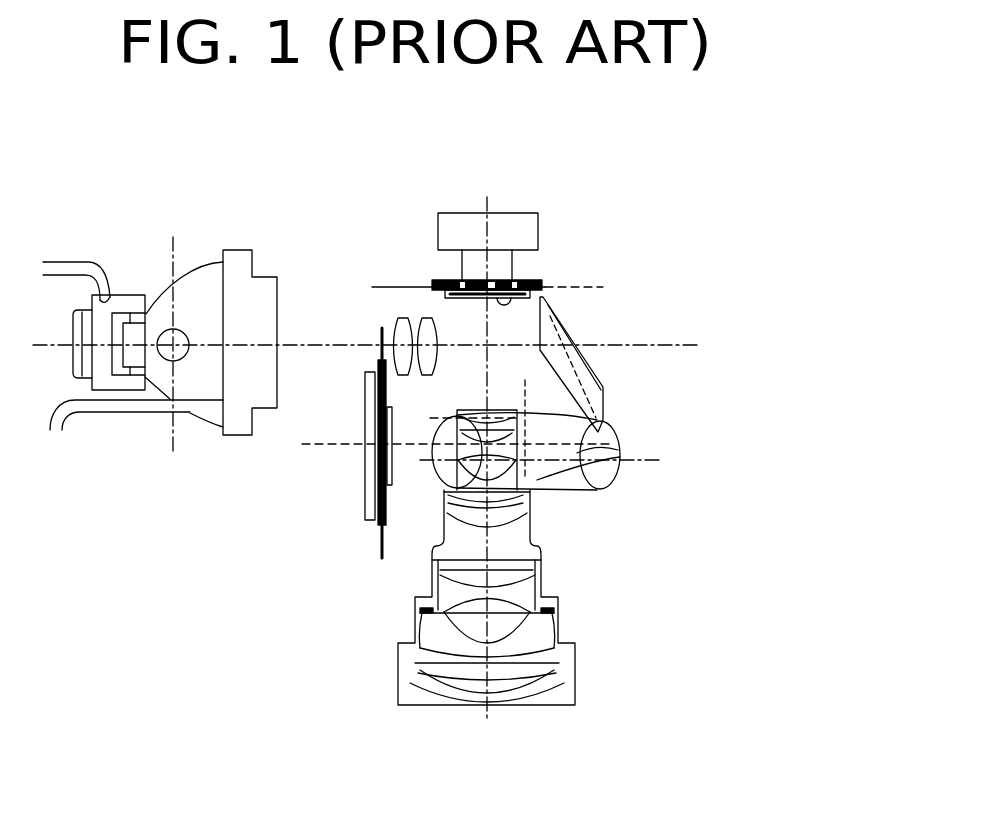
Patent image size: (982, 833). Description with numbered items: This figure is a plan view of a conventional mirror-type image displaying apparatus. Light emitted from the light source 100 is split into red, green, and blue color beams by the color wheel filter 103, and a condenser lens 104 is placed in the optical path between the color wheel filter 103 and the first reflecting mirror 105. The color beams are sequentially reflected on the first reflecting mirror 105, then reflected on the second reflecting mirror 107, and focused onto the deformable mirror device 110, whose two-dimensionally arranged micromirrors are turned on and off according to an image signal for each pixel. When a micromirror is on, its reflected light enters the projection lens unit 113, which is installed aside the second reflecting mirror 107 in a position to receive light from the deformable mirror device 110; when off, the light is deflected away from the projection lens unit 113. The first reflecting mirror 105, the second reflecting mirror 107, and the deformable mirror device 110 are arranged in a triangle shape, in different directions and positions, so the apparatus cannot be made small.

The light source 100 is at (193, 385).
The color wheel filter 103 is at (380, 537).
The condenser lens 104 is at (433, 315).
The first reflecting mirror 105 is at (575, 367).
The second reflecting mirror 107 is at (618, 457).
The deformable mirror device (DMD) 110 is at (513, 223).
The projection lens unit 113 is at (558, 627).